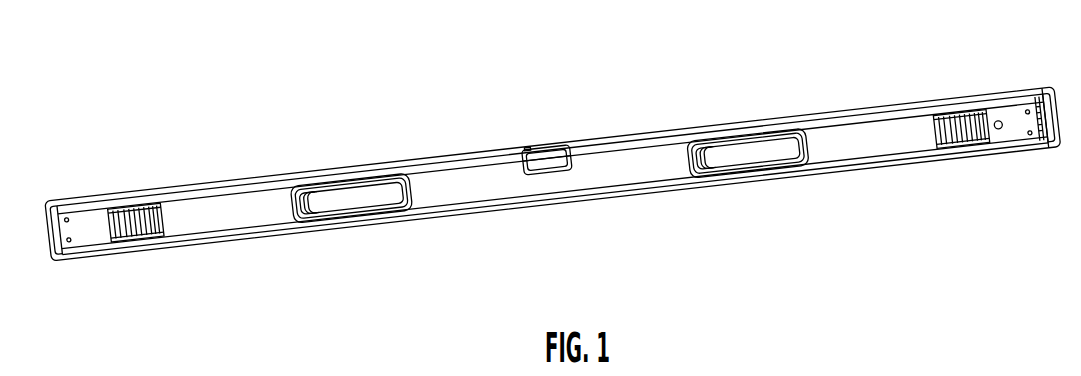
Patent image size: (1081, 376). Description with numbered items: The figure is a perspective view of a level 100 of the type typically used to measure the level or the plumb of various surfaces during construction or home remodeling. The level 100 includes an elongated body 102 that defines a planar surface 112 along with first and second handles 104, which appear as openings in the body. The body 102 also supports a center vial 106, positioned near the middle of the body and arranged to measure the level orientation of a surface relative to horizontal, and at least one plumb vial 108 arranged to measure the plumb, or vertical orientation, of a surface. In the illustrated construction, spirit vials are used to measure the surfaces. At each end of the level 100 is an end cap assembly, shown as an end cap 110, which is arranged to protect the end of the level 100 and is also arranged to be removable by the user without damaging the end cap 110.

The level 100 is at (288, 103).
The body 102 is at (625, 174).
The handles 104 is at (370, 196).
The center vial 106 is at (555, 155).
The plumb vial 108 is at (963, 135).
The end cap 110 is at (1060, 142).
The planar surface 112 is at (830, 112).